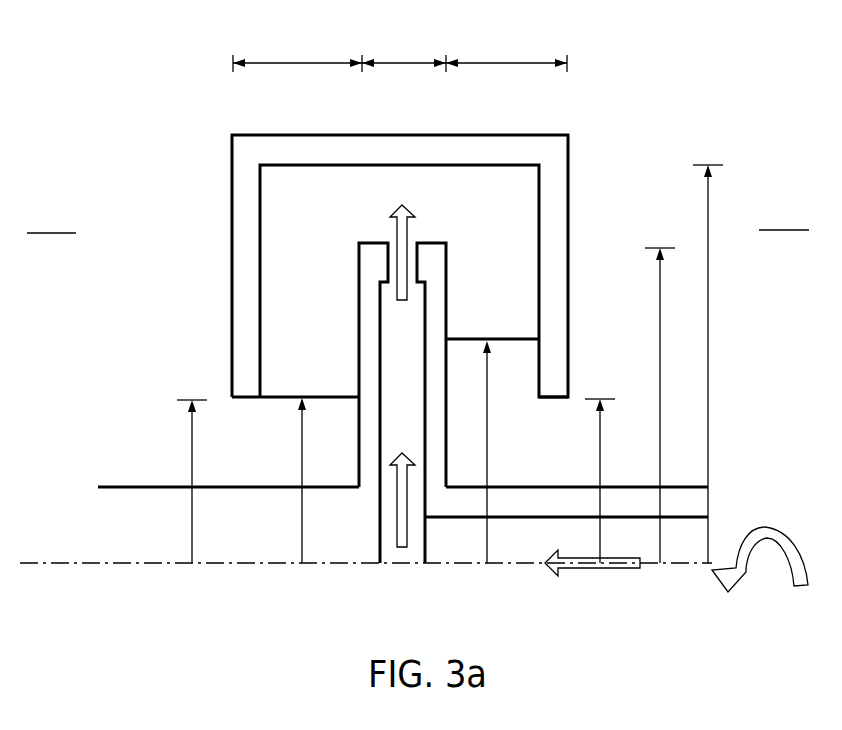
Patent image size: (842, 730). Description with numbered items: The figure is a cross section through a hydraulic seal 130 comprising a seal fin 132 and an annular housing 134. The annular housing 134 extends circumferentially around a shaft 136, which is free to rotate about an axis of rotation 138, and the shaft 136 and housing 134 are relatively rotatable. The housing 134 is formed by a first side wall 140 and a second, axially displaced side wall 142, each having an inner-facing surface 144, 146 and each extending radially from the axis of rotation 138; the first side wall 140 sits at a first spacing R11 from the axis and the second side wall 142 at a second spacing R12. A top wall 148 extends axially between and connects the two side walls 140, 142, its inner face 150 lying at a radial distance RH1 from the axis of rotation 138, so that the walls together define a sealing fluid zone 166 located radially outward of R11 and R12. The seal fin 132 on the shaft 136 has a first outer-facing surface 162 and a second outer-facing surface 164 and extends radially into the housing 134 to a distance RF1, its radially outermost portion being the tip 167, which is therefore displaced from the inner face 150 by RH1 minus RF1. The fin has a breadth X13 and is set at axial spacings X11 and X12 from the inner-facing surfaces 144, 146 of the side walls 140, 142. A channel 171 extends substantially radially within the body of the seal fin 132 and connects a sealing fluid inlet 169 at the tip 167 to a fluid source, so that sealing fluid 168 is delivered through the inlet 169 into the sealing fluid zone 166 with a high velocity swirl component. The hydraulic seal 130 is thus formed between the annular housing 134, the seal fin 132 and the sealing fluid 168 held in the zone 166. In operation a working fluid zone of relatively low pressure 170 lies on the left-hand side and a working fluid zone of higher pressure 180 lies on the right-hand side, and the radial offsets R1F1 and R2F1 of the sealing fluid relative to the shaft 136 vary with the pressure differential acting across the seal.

The hydraulic seal 130 is at (186, 181).
The seal fin 132 is at (359, 272).
The annular housing 134 is at (246, 307).
The shaft 136 is at (128, 487).
The axis of rotation 138 is at (118, 565).
The first side wall 140 is at (231, 368).
The second side wall 142 is at (571, 340).
The inner-facing surface of first side wall 144 is at (259, 363).
The inner-facing surface of second side wall 146 is at (542, 383).
The top wall 148 is at (532, 165).
The inner face of top wall 150 is at (512, 168).
The first outer-facing surface 162 is at (357, 450).
The second outer-facing surface 164 is at (447, 445).
The sealing fluid zone 166 is at (314, 184).
The tip 167 is at (420, 244).
The sealing fluid 168 is at (407, 520).
The sealing fluid inlet 169 is at (412, 247).
The low pressure working fluid zone 170 is at (51, 219).
The channel 171 is at (405, 352).
The high pressure working fluid zone 180 is at (784, 217).
The first axial spacing X11 is at (283, 62).
The second axial spacing X12 is at (498, 62).
The seal fin breadth X13 is at (409, 62).
The first spacing R11 is at (193, 548).
The second spacing R12 is at (601, 548).
The first fluid radial offset R1F1 is at (303, 548).
The second fluid radial offset R2F1 is at (488, 548).
The seal fin radial extent RF1 is at (661, 548).
The top wall inner face radius RH1 is at (710, 428).